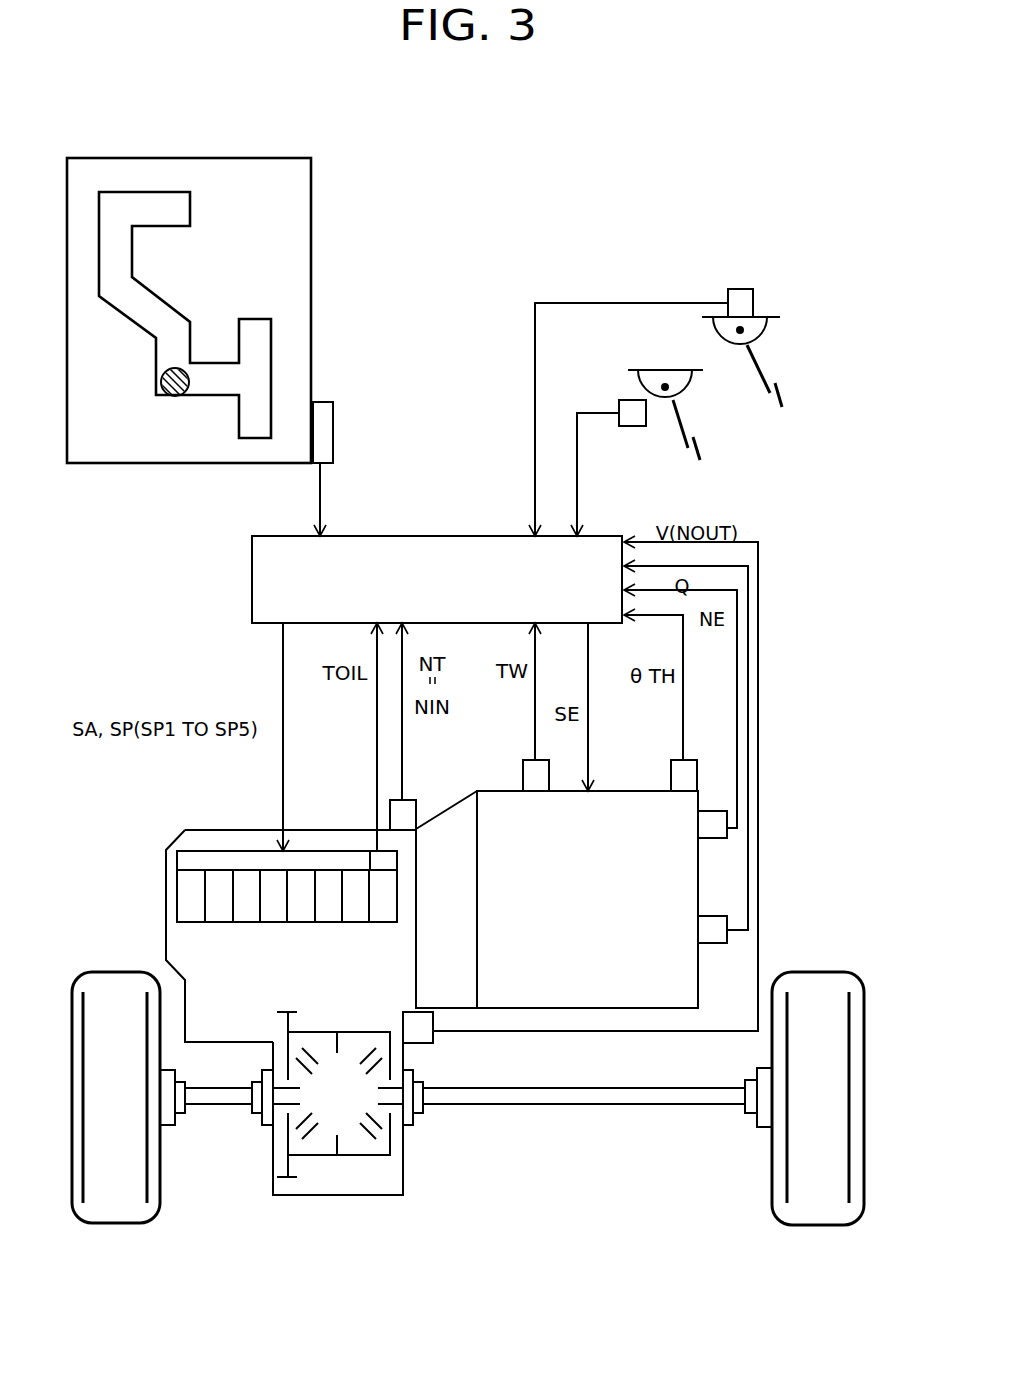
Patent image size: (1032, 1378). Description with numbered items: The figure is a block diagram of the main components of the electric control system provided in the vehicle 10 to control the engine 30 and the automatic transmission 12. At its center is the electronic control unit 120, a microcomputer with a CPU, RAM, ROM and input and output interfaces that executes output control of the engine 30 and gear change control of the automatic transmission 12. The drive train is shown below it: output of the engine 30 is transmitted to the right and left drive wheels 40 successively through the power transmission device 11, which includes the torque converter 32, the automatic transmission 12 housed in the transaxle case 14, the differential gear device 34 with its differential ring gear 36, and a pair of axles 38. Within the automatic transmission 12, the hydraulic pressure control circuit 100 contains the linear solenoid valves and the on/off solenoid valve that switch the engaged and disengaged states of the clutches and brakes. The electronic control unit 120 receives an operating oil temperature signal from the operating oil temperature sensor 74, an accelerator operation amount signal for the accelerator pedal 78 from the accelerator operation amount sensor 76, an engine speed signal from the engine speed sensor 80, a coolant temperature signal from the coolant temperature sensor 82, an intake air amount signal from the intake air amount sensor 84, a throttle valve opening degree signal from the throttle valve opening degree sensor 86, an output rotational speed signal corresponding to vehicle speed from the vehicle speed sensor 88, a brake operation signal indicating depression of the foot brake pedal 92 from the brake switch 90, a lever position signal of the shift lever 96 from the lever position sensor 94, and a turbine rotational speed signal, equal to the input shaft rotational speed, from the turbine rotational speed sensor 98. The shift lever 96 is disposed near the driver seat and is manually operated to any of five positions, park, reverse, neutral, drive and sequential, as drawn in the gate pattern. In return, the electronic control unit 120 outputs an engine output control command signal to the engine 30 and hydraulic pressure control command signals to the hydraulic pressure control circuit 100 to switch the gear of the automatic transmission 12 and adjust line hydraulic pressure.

The vehicle 10 is at (620, 172).
The power transmission device 11 is at (130, 640).
The automatic transmission 12 is at (175, 934).
The transaxle case 14 is at (220, 830).
The engine 30 is at (497, 803).
The torque converter 32 is at (455, 833).
The differential gear device 34 is at (385, 1170).
The differential ring gear 36 is at (290, 1182).
The axles 38 is at (212, 1097).
The drive wheels 40 is at (115, 1208).
The operating oil temperature sensor 74 is at (372, 853).
The accelerator operation amount sensor 76 is at (737, 298).
The accelerator pedal 78 is at (788, 402).
The engine speed sensor 80 is at (717, 832).
The coolant temperature sensor 82 is at (530, 777).
The intake air amount sensor 84 is at (717, 935).
The throttle valve opening degree sensor 86 is at (690, 777).
The vehicle speed sensor 88 is at (433, 1042).
The brake switch 90 is at (632, 420).
The foot brake pedal 92 is at (707, 453).
The lever position sensor 94 is at (330, 402).
The shift lever 96 is at (168, 392).
The turbine rotational speed sensor 98 is at (412, 797).
The hydraulic pressure control circuit 100 is at (205, 866).
The electronic control unit 120 is at (407, 550).